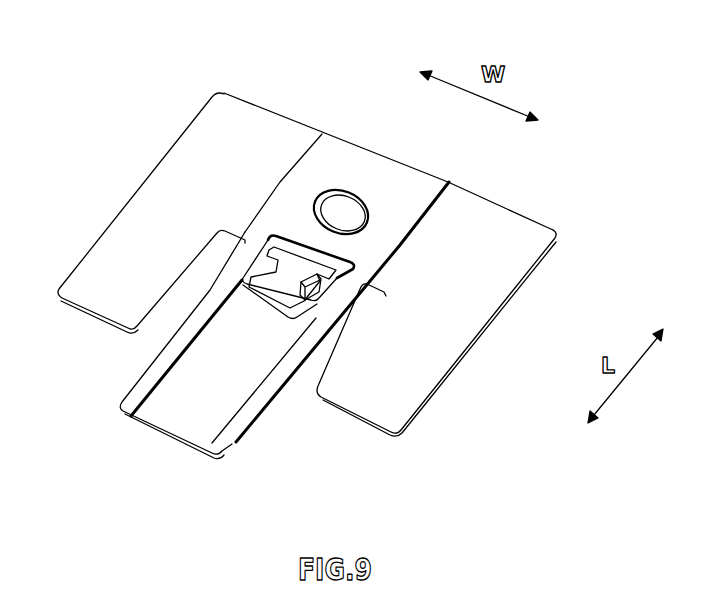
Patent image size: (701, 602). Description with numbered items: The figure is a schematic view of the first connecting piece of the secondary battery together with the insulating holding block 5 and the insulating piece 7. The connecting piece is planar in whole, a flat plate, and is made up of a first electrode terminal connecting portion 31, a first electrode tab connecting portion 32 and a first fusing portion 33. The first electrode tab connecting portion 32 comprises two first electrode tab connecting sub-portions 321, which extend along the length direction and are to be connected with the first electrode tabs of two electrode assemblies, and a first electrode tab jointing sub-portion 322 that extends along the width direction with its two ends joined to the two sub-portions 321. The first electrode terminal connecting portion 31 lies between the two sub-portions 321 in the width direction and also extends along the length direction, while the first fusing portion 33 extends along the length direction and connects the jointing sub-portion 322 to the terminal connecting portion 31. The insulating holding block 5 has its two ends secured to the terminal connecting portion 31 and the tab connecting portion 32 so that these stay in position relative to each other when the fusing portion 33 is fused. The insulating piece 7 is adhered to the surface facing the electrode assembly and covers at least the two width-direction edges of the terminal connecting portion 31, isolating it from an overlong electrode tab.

The insulating holding block 5 is at (347, 295).
The insulating piece 7 is at (278, 375).
The first electrode terminal connecting portion 31 is at (248, 334).
The first electrode tab connecting portion 32 is at (154, 36).
The first fusing portion 33 is at (323, 293).
The first electrode tab connecting sub-portion 321 is at (173, 210).
The first electrode tab jointing sub-portion 322 is at (273, 180).